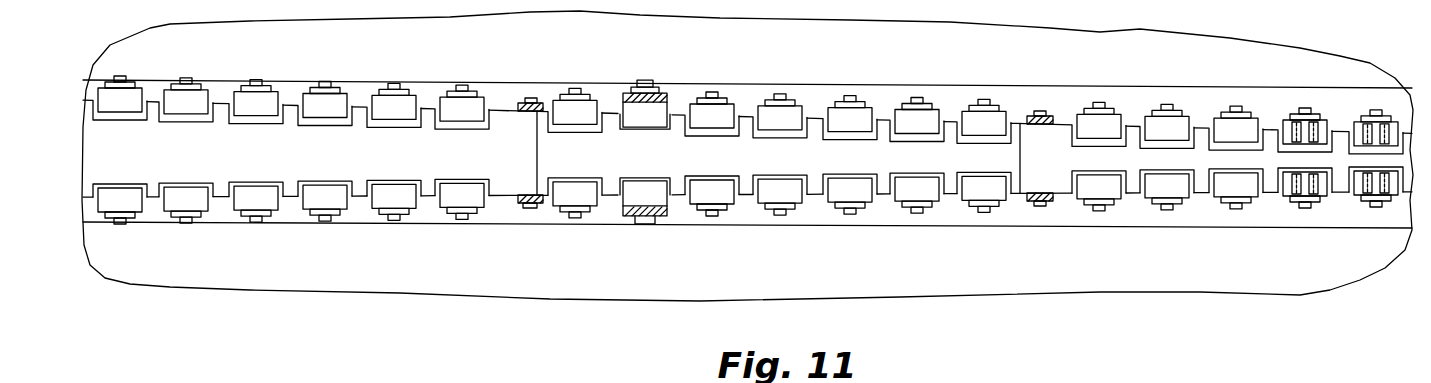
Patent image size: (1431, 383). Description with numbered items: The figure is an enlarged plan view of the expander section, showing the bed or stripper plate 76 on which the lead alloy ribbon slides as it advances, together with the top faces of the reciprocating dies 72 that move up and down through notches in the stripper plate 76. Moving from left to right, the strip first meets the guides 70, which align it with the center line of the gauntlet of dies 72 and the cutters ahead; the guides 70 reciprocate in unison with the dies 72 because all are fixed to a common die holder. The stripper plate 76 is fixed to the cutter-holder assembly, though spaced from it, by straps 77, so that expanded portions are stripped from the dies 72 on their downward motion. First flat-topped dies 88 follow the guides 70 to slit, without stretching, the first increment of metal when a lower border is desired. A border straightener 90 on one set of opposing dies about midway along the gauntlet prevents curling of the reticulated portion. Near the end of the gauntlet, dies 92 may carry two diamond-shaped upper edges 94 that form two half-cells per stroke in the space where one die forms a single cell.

The guides 70 is at (117, 195).
The reciprocating dies 72 is at (448, 113).
The stripper plate 76 is at (290, 135).
The straps 77 is at (533, 103).
The first flat-topped dies 88 is at (182, 193).
The border straightener 90 is at (660, 98).
The dies 92 is at (1331, 190).
The diamond-shaped upper edges 94 is at (1312, 181).